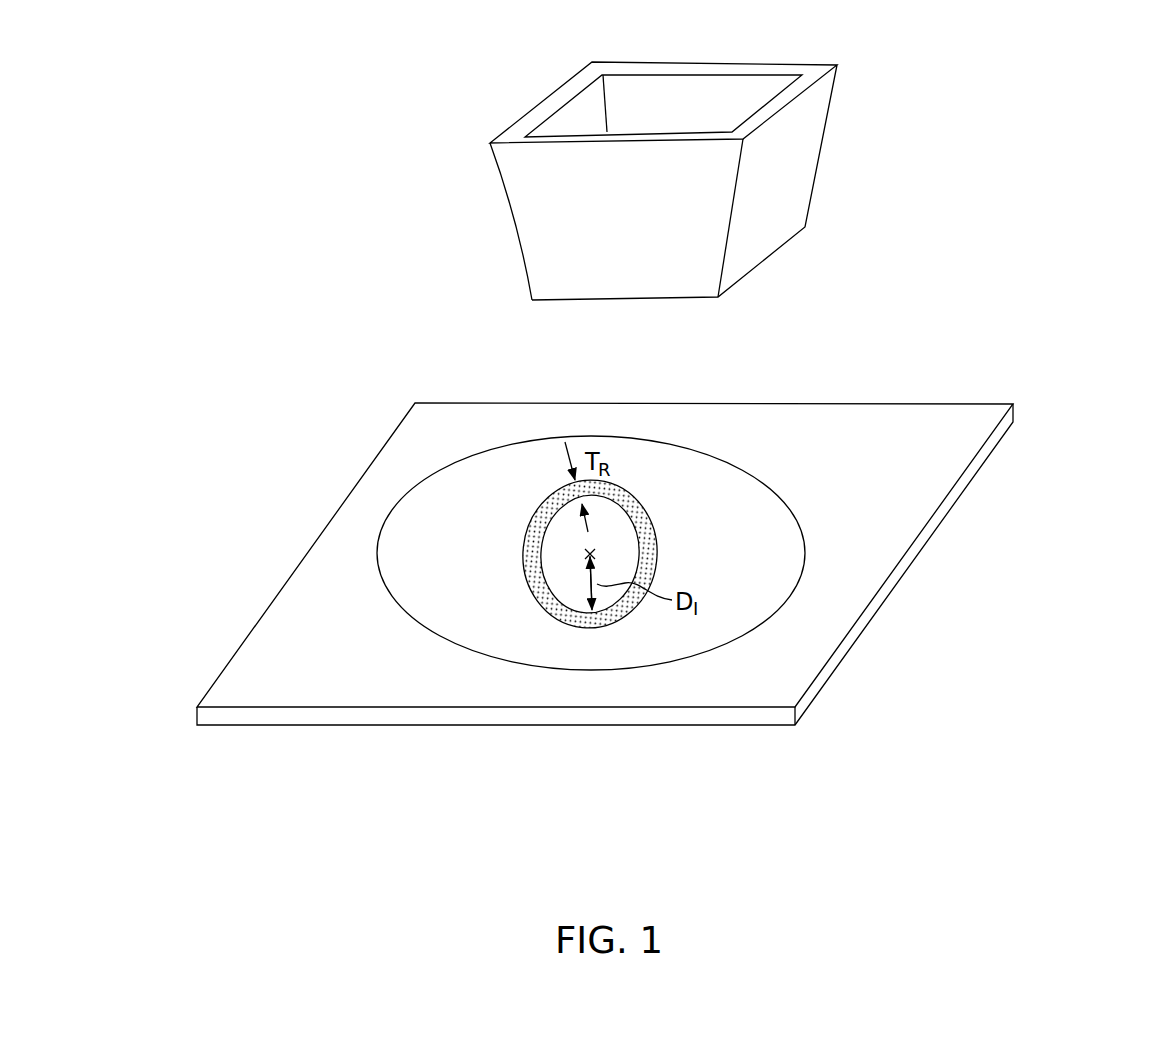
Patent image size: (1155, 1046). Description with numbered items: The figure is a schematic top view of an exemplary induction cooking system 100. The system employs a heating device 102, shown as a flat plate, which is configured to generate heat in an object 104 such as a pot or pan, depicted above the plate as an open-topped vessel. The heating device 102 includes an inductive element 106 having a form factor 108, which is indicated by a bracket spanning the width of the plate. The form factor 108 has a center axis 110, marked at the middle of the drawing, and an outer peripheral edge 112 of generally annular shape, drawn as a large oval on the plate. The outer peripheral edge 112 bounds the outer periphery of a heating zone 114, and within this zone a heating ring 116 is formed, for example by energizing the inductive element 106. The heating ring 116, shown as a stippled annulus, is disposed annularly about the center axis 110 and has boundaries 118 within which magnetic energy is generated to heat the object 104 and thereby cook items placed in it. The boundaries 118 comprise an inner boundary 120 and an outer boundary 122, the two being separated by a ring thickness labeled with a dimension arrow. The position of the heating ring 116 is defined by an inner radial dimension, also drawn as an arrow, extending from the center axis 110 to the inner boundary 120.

The induction cooking system 100 is at (1034, 95).
The heating device 102 is at (201, 672).
The object 104 is at (795, 288).
The inductive element 106 is at (394, 607).
The form factor 108 is at (784, 780).
The center axis 110 is at (598, 552).
The outer peripheral edge 112 is at (780, 488).
The heating zone 114 is at (521, 466).
The heating ring 116 is at (529, 606).
The boundaries 118 is at (616, 515).
The inner boundary 120 is at (543, 546).
The outer boundary 122 is at (522, 568).